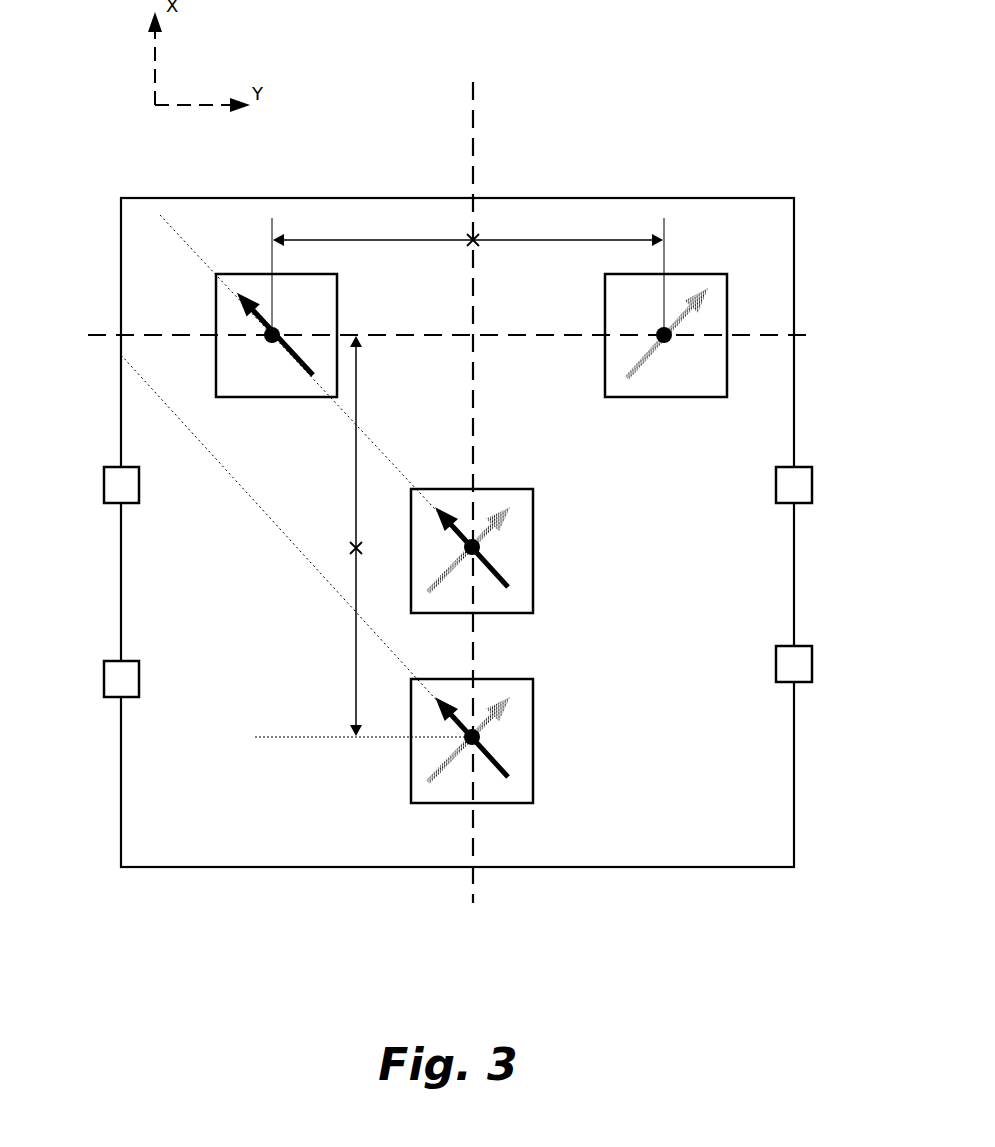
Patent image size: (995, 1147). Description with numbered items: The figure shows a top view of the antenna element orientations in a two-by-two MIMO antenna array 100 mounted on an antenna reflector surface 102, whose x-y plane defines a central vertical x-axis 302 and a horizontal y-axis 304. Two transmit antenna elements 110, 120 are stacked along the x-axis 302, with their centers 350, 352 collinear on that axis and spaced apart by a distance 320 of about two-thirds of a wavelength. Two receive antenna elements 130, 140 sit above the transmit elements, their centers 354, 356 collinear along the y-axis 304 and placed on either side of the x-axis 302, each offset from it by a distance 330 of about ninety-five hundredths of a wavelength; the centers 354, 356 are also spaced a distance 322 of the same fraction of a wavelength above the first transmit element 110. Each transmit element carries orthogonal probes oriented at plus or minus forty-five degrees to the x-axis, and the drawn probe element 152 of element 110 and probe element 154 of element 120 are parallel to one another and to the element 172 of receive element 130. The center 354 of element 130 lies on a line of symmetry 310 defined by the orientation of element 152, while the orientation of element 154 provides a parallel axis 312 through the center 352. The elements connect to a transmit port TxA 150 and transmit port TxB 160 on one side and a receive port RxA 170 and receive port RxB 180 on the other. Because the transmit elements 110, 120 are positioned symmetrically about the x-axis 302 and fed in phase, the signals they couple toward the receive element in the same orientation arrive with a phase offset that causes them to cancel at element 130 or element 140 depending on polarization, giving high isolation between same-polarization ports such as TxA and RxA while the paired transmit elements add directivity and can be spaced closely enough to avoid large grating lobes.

The MIMO antenna array 100 is at (570, 132).
The antenna reflector surface 102 is at (742, 198).
The first transmit antenna element 110 is at (535, 598).
The second transmit antenna element 120 is at (535, 792).
The first receive antenna element 130 is at (338, 280).
The second receive antenna element 140 is at (690, 272).
The transmit port TxA 150 is at (122, 661).
The probe element of first transmit element 152 is at (447, 512).
The probe element of second transmit element 154 is at (447, 702).
The transmit port TxB 160 is at (808, 646).
The receive port RxA 170 is at (122, 467).
The probe element of first receive element 172 is at (238, 302).
The receive port RxB 180 is at (808, 467).
The x-axis 302 is at (452, 150).
The y-axis 304 is at (108, 322).
The line of symmetry 310 is at (375, 428).
The parallel axis 312 is at (316, 578).
The transmit element spacing distance 320 is at (350, 680).
The receive element height distance 322 is at (350, 470).
The receive element lateral spacing distance 330 is at (301, 216).
The center of first transmit element 350 is at (478, 547).
The center of second transmit element 352 is at (478, 737).
The center of first receive element 354 is at (275, 335).
The center of second receive element 356 is at (662, 335).